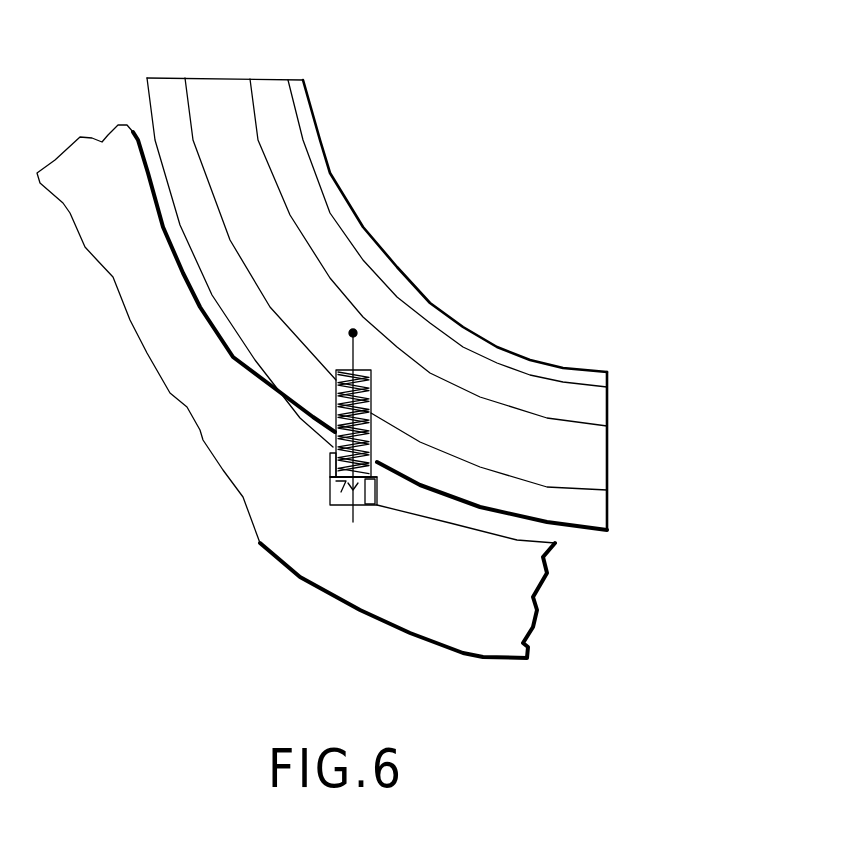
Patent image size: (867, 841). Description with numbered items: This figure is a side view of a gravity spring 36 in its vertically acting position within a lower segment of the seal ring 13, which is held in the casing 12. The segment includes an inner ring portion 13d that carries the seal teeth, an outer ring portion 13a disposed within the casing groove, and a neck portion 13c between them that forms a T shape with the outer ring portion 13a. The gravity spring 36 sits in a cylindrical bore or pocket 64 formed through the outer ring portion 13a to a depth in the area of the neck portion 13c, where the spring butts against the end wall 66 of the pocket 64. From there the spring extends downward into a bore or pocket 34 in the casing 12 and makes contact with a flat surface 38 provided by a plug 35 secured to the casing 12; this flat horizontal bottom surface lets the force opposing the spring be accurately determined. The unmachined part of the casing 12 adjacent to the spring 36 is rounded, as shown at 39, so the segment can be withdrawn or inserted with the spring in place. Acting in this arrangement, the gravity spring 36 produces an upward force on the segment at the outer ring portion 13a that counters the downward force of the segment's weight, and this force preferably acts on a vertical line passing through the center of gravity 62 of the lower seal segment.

The casing 12 is at (497, 610).
The seal ring 13 is at (247, 168).
The outer ring portion 13a is at (587, 507).
The neck portion 13c is at (580, 450).
The inner ring portion 13d is at (593, 402).
The bore or pocket 34 is at (333, 462).
The plug 35 is at (377, 507).
The gravity spring 36 is at (333, 445).
The flat surface 38 is at (337, 485).
The rounded part of casing 39 is at (333, 457).
The center of gravity 62 is at (353, 333).
The cylindrical bore or pocket 64 is at (335, 390).
The end wall 66 is at (362, 368).